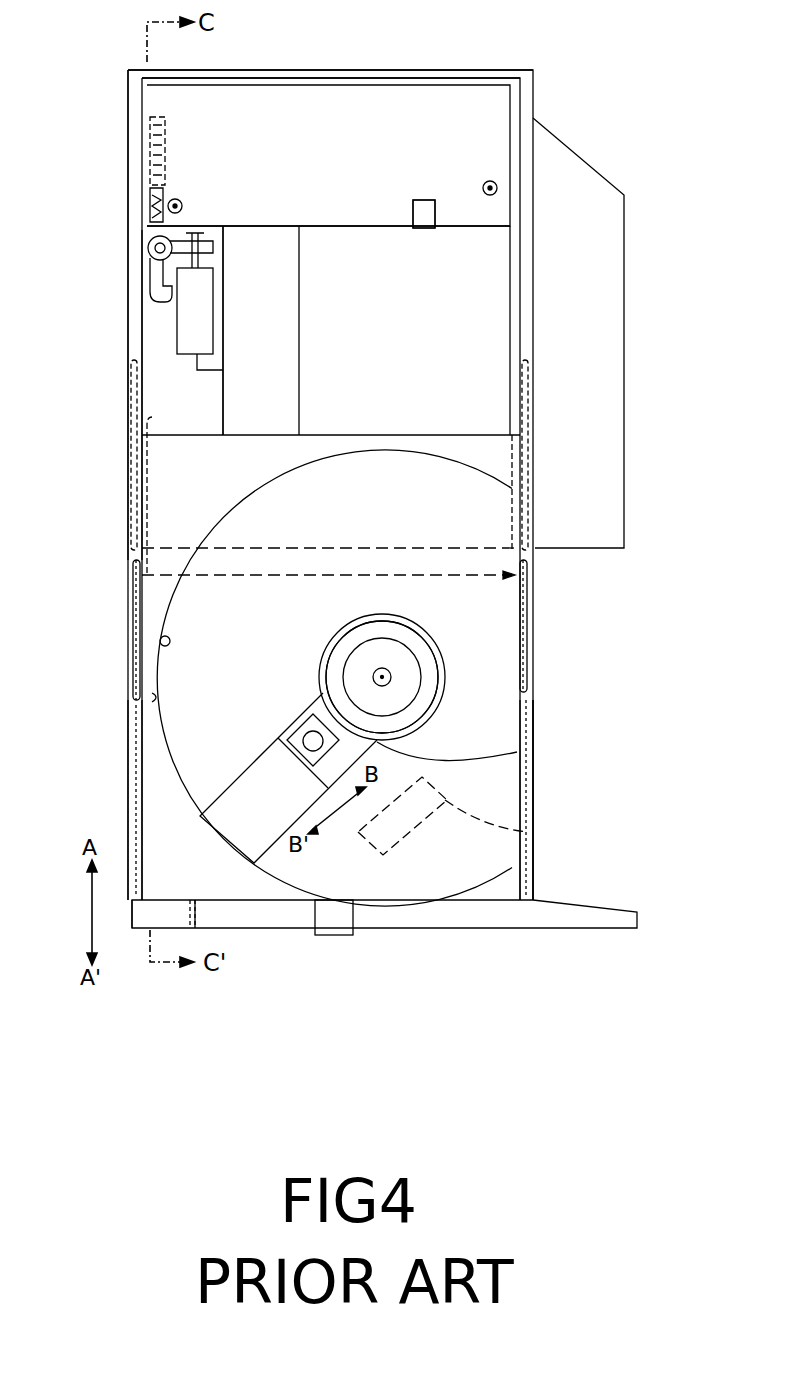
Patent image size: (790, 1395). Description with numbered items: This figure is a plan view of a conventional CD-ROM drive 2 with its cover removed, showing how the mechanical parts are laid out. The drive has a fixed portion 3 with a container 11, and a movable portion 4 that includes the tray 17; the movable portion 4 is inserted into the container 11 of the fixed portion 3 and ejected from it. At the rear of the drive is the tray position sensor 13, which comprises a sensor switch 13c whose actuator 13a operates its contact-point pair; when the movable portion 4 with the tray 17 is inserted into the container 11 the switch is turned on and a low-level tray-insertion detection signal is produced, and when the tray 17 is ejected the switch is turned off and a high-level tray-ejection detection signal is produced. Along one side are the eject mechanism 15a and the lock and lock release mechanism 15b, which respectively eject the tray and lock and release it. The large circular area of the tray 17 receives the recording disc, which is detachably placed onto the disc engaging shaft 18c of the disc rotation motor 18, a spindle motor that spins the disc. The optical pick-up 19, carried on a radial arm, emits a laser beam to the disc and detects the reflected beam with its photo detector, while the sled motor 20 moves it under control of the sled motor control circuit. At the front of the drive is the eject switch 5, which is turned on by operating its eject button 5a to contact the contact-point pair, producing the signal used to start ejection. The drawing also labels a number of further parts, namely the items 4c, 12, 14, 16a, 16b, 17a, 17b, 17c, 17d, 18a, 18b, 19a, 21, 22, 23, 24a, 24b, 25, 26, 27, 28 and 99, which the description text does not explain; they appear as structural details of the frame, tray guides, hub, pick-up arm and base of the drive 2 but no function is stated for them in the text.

The CD-ROM drive 2 is at (647, 152).
The fixed portion 3 is at (636, 240).
The movable portion 4 is at (544, 786).
The frame partition line 4c is at (524, 577).
The eject switch 5 is at (342, 940).
The eject button 5a is at (356, 933).
The container 11 is at (312, 70).
The upper compartment 12 is at (376, 95).
The tray position sensor 13 is at (428, 190).
The actuator 13a is at (443, 226).
The sensor switch 13c is at (413, 214).
The side plate 14 is at (128, 326).
The eject mechanism 15a is at (121, 102).
The lock and lock release mechanism 15b is at (168, 310).
The pivot pin 16a is at (494, 184).
The pivot pin 16b is at (167, 204).
The tray 17 is at (520, 738).
The drum guide stop 17a is at (153, 700).
The lower guide rail 17b is at (133, 805).
The upper guide rail 17c is at (133, 600).
The guide rail slider 17d is at (131, 410).
The disc rotation motor 18 is at (462, 664).
The shaft 18a is at (390, 674).
The outer hub ring 18b is at (436, 680).
The disc engaging shaft 18c is at (403, 692).
The optical pick-up 19 is at (265, 768).
The arm bearing 19a is at (290, 730).
The sled motor 20 is at (528, 832).
The cable 21 is at (517, 752).
The base plate 22 is at (497, 918).
The partition wall 23 is at (223, 397).
The lower spring 24a is at (150, 208).
The upper spring 24b is at (150, 135).
The stopper pin 25 is at (160, 640).
The lever pivot 26 is at (150, 246).
The hook lever 27 is at (156, 274).
The pipe 28 is at (177, 340).
The slit 99 is at (198, 928).